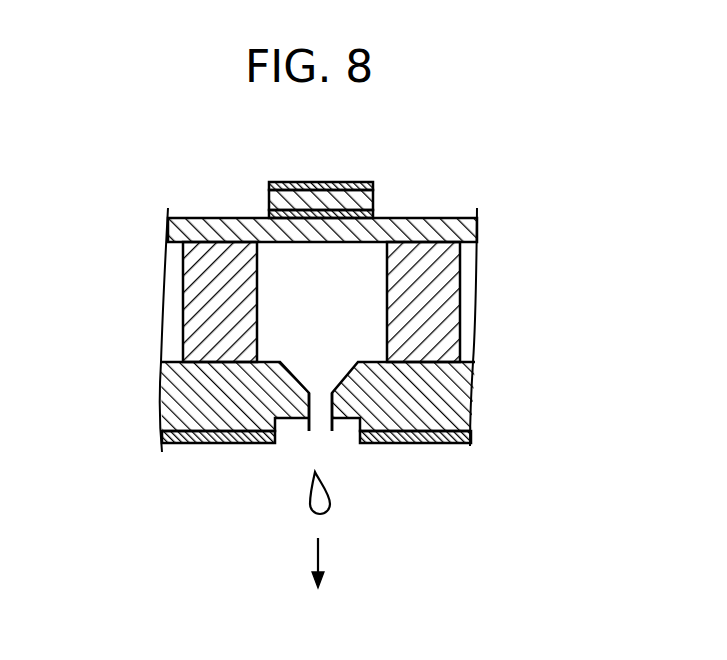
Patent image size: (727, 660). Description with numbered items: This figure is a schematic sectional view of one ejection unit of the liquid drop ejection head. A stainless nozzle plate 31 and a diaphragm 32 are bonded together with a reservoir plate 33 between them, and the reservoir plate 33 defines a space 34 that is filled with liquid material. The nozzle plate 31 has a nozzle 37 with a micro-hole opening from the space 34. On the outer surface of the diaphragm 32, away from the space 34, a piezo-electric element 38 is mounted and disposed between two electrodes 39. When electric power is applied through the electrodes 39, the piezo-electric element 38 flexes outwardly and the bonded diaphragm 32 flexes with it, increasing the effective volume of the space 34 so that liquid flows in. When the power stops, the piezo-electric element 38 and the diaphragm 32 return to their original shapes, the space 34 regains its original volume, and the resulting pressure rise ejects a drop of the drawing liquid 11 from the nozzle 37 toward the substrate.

The drawing liquid 11 is at (330, 500).
The nozzle plate 31 is at (448, 400).
The diaphragm 32 is at (177, 232).
The reservoir plate 33 is at (183, 315).
The space 34 is at (370, 290).
The nozzle 37 is at (318, 414).
The piezo-electric element 38 is at (378, 198).
The electrodes 39 is at (307, 182).